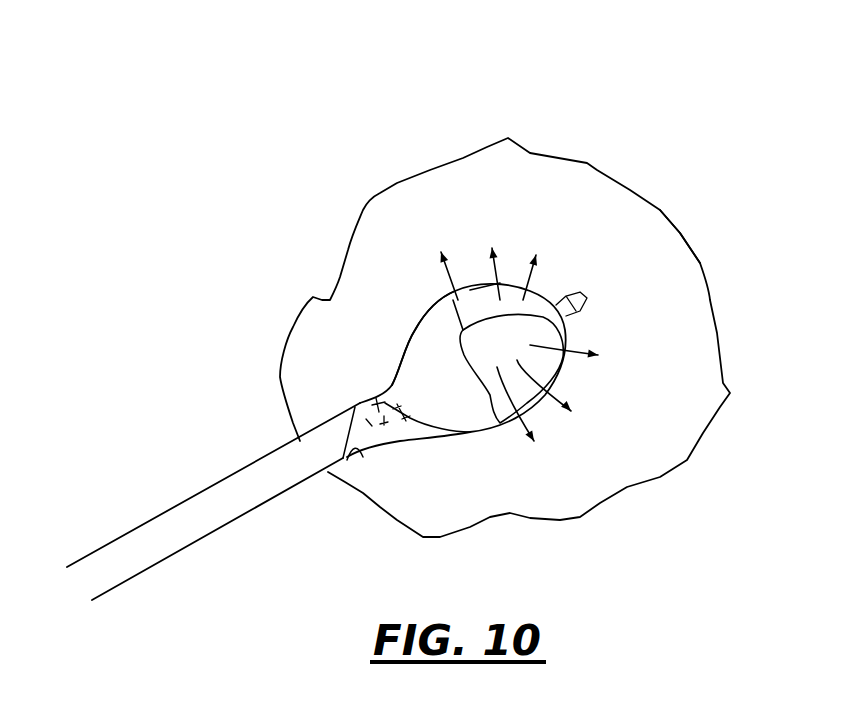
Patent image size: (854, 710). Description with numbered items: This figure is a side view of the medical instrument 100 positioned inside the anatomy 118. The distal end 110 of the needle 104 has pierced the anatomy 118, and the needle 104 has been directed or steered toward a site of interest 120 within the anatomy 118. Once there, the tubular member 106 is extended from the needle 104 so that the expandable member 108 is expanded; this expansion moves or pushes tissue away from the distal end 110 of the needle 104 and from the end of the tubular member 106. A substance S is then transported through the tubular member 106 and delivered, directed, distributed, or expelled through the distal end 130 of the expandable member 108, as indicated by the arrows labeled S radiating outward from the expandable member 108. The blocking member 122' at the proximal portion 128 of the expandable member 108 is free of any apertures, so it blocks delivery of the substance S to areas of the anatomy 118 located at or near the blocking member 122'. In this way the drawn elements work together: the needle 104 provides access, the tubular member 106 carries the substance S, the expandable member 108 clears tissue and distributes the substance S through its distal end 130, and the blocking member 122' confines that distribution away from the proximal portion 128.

The medical instrument 100 is at (327, 358).
The needle 104 is at (147, 547).
The tubular member 106 is at (363, 423).
The expandable member 108 is at (511, 226).
The distal end of the needle 110 is at (363, 425).
The anatomy 118 is at (628, 192).
The site of interest 120 is at (672, 248).
The blocking member 122' is at (508, 402).
The proximal portion of the expandable member 128 is at (428, 350).
The distal end of the expandable member 130 is at (487, 303).